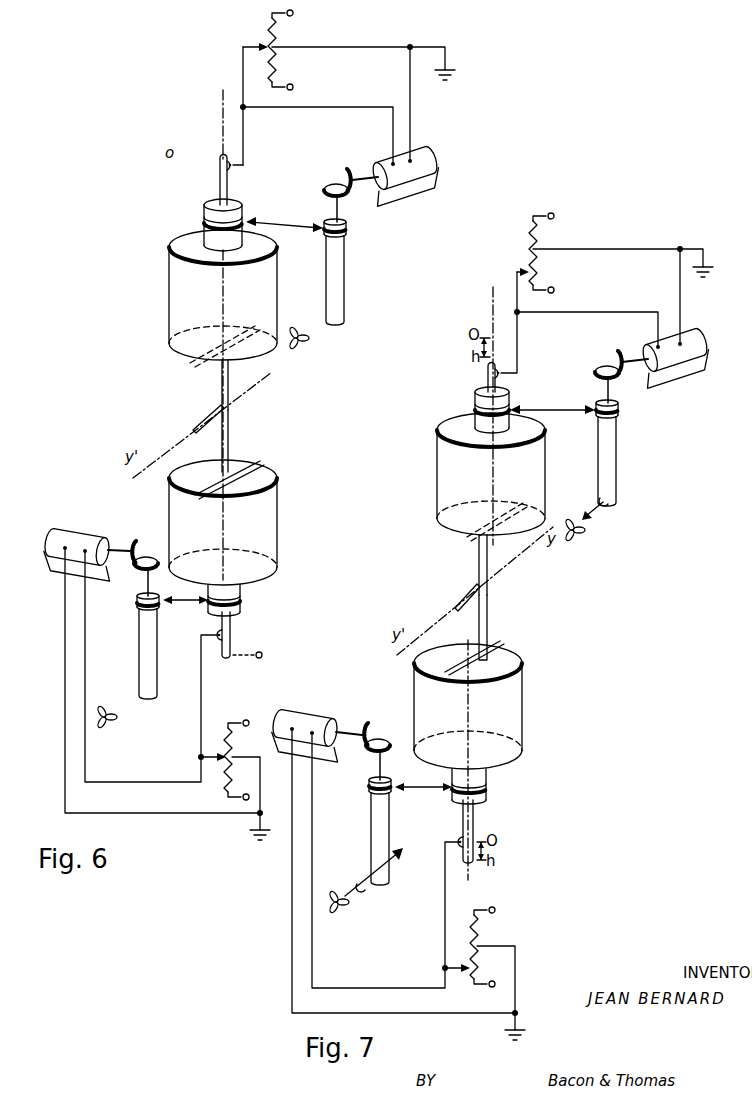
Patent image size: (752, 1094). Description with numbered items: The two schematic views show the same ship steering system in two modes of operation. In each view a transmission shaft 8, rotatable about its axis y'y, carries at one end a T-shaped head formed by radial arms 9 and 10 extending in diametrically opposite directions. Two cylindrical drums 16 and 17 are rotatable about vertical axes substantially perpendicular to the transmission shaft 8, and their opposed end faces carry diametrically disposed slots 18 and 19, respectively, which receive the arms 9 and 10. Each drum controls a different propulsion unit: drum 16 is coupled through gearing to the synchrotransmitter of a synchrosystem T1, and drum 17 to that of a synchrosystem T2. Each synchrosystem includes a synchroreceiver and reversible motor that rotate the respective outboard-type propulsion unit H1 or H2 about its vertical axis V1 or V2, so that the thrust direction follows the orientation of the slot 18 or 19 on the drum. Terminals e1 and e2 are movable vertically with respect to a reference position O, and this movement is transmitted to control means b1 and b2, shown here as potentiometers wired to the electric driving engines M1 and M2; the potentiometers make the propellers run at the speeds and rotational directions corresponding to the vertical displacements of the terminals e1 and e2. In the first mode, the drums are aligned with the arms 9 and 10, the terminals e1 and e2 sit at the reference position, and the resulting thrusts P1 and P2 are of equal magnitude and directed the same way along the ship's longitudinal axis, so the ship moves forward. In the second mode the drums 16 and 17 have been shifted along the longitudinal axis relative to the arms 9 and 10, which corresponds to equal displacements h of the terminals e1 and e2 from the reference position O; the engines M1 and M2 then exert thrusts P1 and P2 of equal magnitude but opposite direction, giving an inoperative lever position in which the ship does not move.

In FIG. 6, the second transmission shaft 8 is at (197, 428).
In FIG. 7, the second transmission shaft 8 is at (465, 591).
In FIG. 6, the radial arm 9 is at (231, 450).
In FIG. 7, the radial arm 9 is at (487, 620).
In FIG. 6, the radial arm 10 is at (231, 376).
In FIG. 7, the radial arm 10 is at (484, 556).
In FIG. 6, the drum 16 is at (275, 536).
In FIG. 7, the drum 16 is at (516, 715).
In FIG. 6, the drum 17 is at (175, 297).
In FIG. 7, the drum 17 is at (442, 476).
In FIG. 6, the slot 18 is at (257, 470).
In FIG. 7, the slot 18 is at (497, 647).
In FIG. 6, the slot 19 is at (205, 366).
In FIG. 7, the slot 19 is at (473, 535).
In FIG. 6, the engine M1 is at (84, 534).
In FIG. 7, the engine M1 is at (320, 722).
In FIG. 6, the engine M2 is at (430, 162).
In FIG. 7, the engine M2 is at (690, 346).
In FIG. 6, the vertical axis V1 is at (142, 587).
In FIG. 7, the vertical axis V1 is at (377, 775).
In FIG. 6, the vertical axis V2 is at (341, 216).
In FIG. 7, the vertical axis V2 is at (602, 395).
In FIG. 6, the synchrosystem T1 is at (185, 592).
In FIG. 7, the synchrosystem T1 is at (423, 781).
In FIG. 6, the synchrosystem T2 is at (284, 214).
In FIG. 7, the synchrosystem T2 is at (552, 400).
In FIG. 6, the propulsion unit H1 is at (112, 712).
In FIG. 7, the propulsion unit H1 is at (370, 854).
In FIG. 6, the propulsion unit H2 is at (305, 332).
In FIG. 7, the propulsion unit H2 is at (609, 468).
In FIG. 6, the thrust P1 is at (134, 728).
In FIG. 7, the thrust P1 is at (372, 881).
In FIG. 6, the thrust P2 is at (320, 353).
In FIG. 7, the thrust P2 is at (586, 515).
In FIG. 6, the control means b1 is at (235, 751).
In FIG. 7, the control means b1 is at (488, 937).
In FIG. 6, the control means b2 is at (266, 42).
In FIG. 7, the control means b2 is at (528, 236).
In FIG. 6, the terminal e1 is at (231, 684).
In FIG. 7, the terminal e1 is at (459, 884).
In FIG. 6, the terminal e2 is at (233, 131).
In FIG. 7, the terminal e2 is at (505, 349).